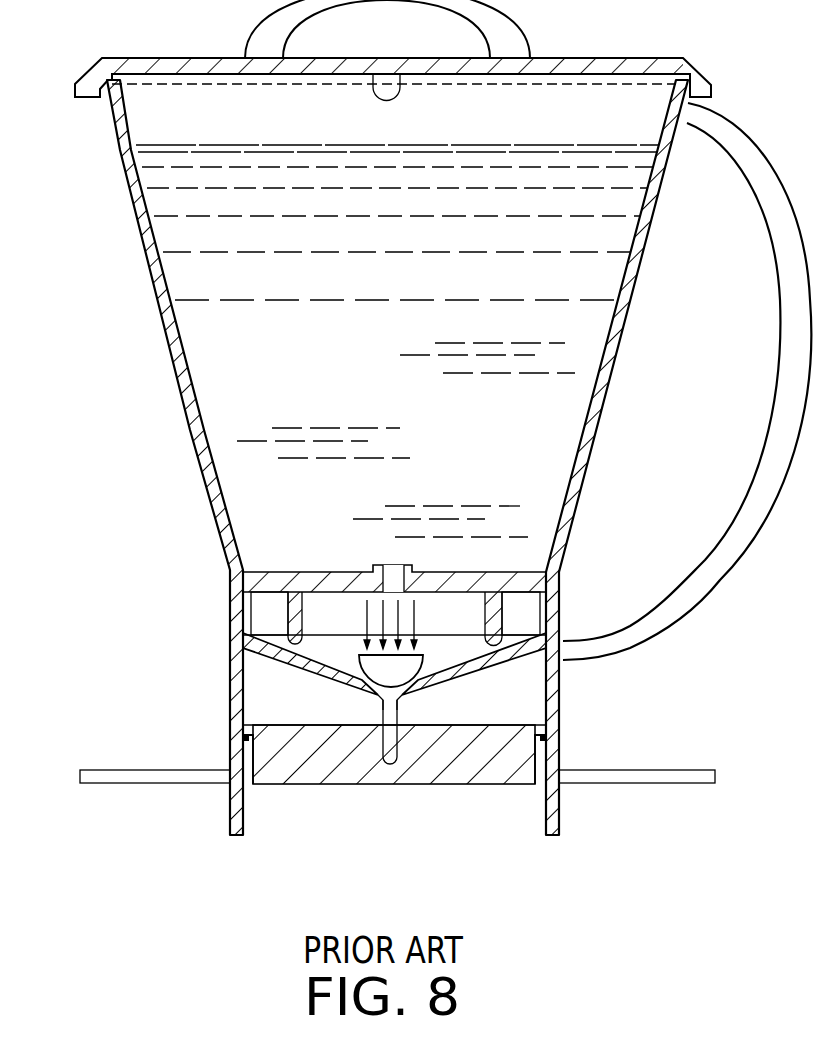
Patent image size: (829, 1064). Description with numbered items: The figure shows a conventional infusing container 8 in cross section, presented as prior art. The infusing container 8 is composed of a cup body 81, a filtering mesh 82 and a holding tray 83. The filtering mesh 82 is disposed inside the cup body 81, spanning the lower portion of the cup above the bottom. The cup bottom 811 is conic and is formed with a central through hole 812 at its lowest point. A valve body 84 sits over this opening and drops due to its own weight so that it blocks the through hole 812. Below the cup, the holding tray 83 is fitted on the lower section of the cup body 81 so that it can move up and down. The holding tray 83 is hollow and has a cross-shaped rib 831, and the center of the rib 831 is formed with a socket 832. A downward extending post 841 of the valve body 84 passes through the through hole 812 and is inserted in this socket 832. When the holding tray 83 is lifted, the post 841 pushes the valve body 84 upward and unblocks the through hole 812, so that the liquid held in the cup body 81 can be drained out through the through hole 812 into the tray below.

The infusing container 8 is at (130, 384).
The cup body 81 is at (138, 216).
The cup bottom 811 is at (332, 678).
The through hole 812 is at (400, 707).
The filtering mesh 82 is at (494, 572).
The holding tray 83 is at (644, 781).
The cross-shaped rib 831 is at (290, 768).
The socket 832 is at (390, 776).
The valve body 84 is at (383, 665).
The post 841 is at (395, 720).